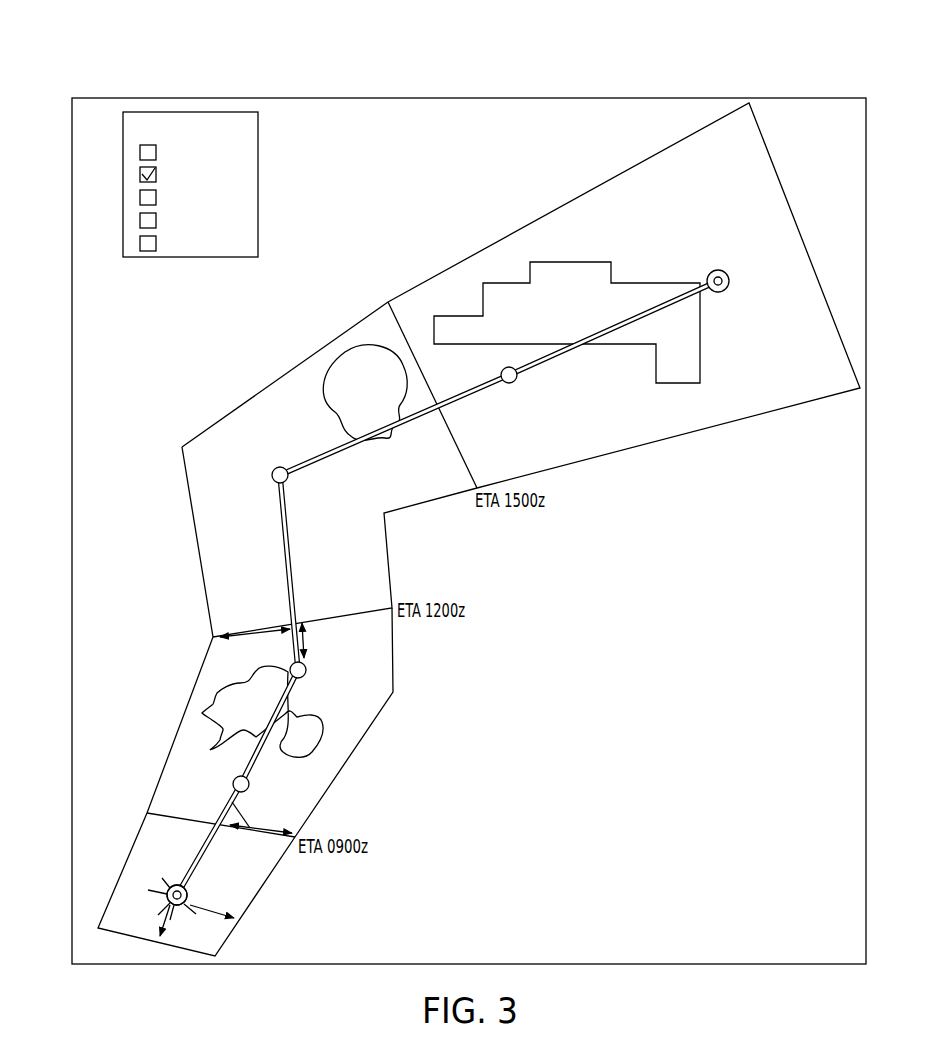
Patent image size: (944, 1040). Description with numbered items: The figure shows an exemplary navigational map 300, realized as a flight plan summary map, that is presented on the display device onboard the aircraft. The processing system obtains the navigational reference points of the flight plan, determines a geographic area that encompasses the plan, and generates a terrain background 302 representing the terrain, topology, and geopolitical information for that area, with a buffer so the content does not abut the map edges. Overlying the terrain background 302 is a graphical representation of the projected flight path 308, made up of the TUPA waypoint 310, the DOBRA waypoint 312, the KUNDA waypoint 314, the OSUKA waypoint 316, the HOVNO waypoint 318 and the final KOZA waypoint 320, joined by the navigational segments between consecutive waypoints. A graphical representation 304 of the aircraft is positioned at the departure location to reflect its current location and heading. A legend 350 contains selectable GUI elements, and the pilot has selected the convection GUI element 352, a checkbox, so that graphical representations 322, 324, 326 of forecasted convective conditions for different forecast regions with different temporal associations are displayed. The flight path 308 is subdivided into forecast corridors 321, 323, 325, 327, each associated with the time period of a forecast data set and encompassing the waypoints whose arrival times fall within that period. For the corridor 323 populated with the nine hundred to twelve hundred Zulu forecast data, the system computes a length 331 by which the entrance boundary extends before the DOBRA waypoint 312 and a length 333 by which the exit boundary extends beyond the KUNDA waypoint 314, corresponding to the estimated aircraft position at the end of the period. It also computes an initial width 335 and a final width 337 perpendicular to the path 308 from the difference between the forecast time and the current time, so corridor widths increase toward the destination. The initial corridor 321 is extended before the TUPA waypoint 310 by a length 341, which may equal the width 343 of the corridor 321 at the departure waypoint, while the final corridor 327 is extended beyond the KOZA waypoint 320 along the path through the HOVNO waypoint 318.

The navigational map 300 is at (480, 98).
The terrain background 302 is at (696, 787).
The graphical representation of the aircraft 304 is at (166, 888).
The projected flight path 308 is at (278, 543).
The TUPA waypoint 310 is at (177, 884).
The DOBRA waypoint 312 is at (233, 786).
The KUNDA waypoint 314 is at (290, 668).
The OSUKA waypoint 316 is at (272, 478).
The HOVNO waypoint 318 is at (509, 384).
The KOZA waypoint 320 is at (718, 270).
The initial forecast corridor 321 is at (271, 880).
The graphical representation of forecasted meteorological conditions 322 is at (202, 712).
The forecast corridor 323 is at (393, 692).
The graphical representation of forecasted meteorological conditions 324 is at (343, 350).
The forecast corridor 325 is at (262, 391).
The graphical representation of forecasted meteorological conditions 326 is at (618, 261).
The final forecast corridor 327 is at (501, 236).
The length 331 is at (244, 804).
The length 333 is at (306, 637).
The initial width 335 is at (260, 832).
The final width 337 is at (250, 630).
The length 341 is at (162, 925).
The width 343 is at (218, 915).
The legend 350 is at (258, 184).
The GUI element 352 is at (140, 174).